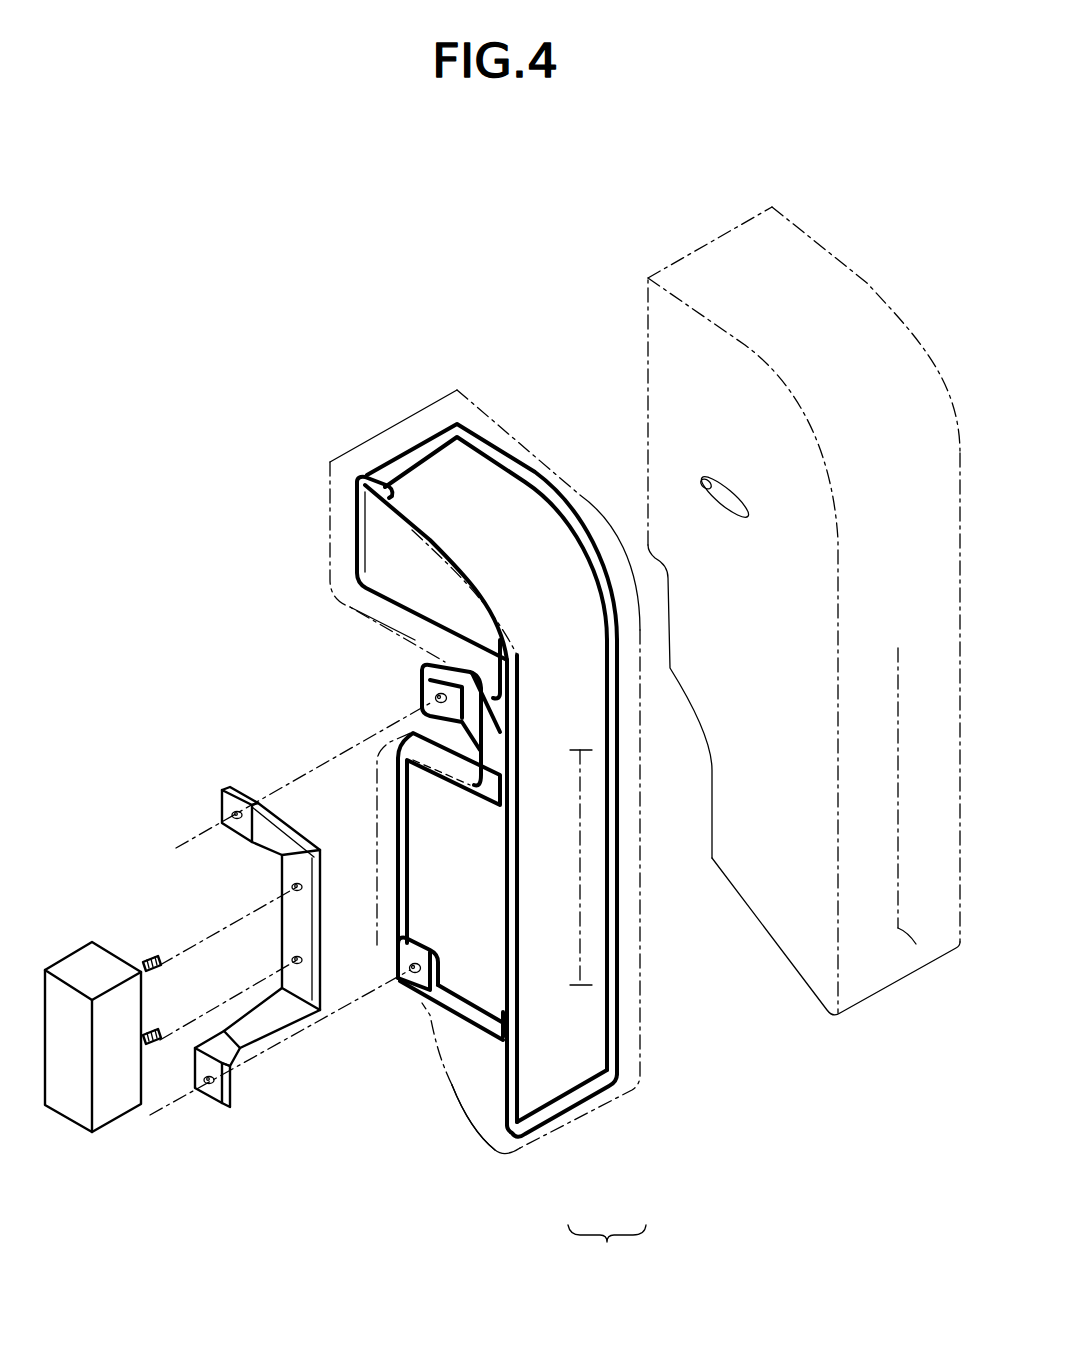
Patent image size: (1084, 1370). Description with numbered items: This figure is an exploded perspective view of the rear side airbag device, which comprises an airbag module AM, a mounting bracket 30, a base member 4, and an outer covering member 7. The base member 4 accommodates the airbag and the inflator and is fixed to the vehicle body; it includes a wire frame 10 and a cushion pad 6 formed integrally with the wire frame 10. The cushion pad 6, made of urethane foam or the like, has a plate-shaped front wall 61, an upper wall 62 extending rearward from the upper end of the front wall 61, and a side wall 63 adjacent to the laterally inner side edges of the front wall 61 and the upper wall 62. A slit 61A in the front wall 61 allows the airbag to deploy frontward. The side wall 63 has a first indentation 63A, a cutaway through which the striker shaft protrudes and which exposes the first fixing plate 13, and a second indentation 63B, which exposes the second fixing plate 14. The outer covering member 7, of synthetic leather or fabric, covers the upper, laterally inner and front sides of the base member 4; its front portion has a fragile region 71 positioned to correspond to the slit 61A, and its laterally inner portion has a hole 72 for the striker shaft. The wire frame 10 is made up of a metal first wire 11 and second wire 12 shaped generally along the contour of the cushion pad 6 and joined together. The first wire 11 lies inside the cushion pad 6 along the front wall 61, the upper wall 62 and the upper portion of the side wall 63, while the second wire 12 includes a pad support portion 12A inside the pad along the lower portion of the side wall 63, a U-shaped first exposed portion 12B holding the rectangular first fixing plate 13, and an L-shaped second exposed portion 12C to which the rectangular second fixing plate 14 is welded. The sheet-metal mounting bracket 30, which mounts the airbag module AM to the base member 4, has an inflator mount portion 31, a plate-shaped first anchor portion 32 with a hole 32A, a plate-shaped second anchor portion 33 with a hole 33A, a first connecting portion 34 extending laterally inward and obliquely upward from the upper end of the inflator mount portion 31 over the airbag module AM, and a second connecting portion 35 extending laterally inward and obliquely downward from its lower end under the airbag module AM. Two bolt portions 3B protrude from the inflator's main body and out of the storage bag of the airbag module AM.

The base member 4 is at (607, 1247).
The cushion pad 6 is at (622, 1100).
The outer covering member 7 is at (871, 1006).
The wire frame 10 is at (560, 1110).
The first wire 11 is at (622, 985).
The second wire 12 is at (478, 1035).
The pad support portion 12A is at (405, 857).
The first exposed portion 12B is at (420, 668).
The second exposed portion 12C is at (396, 960).
The first fixing plate 13 is at (430, 690).
The second fixing plate 14 is at (416, 978).
The mounting bracket 30 is at (248, 978).
The inflator mount portion 31 is at (298, 904).
The first anchor portion 32 is at (220, 806).
The hole 32A is at (241, 811).
The second anchor portion 33 is at (211, 1109).
The hole 33A is at (192, 1103).
The first connecting portion 34 is at (268, 848).
The second connecting portion 35 is at (247, 1027).
The bolt portion 3B is at (144, 958).
The front wall 61 is at (578, 748).
The slit 61A is at (582, 931).
The upper wall 62 is at (473, 488).
The side wall 63 is at (392, 540).
The first indentation 63A is at (365, 617).
The second indentation 63B is at (427, 1020).
The fragile region 71 is at (917, 946).
The hole 72 is at (698, 490).
The airbag module AM is at (105, 1140).